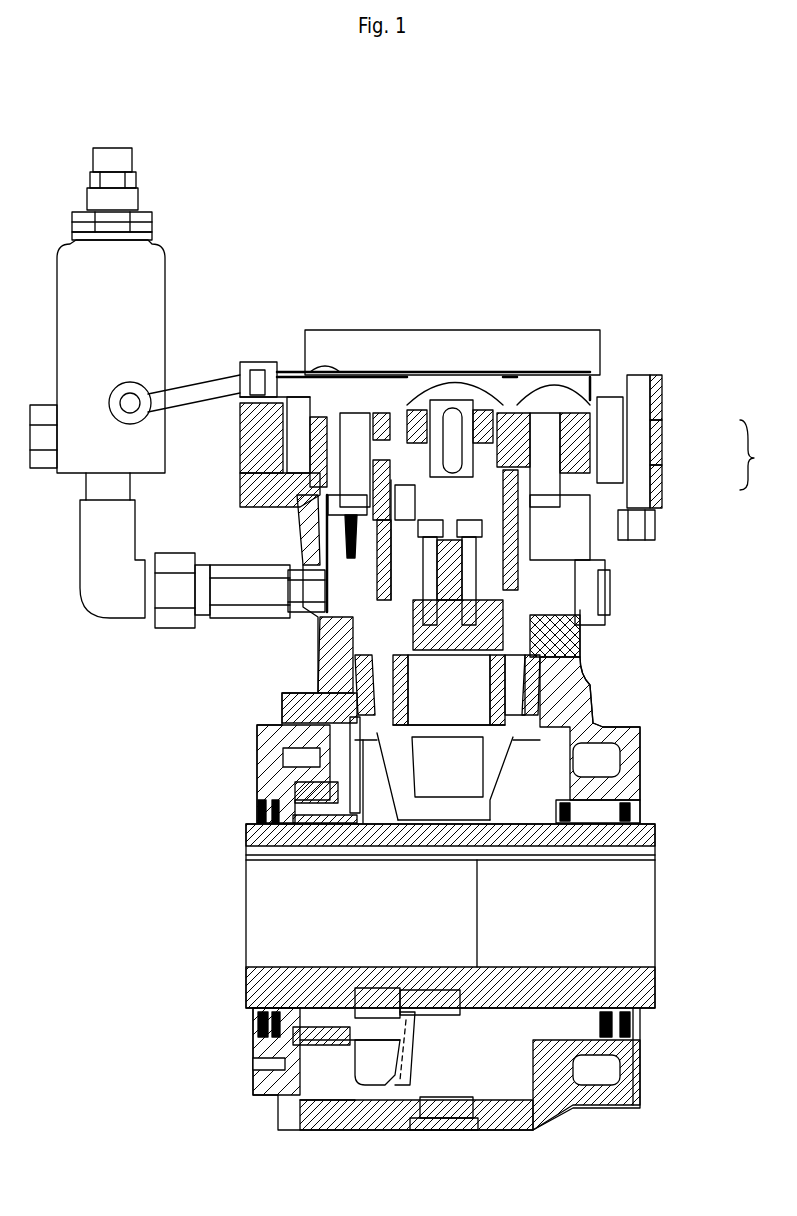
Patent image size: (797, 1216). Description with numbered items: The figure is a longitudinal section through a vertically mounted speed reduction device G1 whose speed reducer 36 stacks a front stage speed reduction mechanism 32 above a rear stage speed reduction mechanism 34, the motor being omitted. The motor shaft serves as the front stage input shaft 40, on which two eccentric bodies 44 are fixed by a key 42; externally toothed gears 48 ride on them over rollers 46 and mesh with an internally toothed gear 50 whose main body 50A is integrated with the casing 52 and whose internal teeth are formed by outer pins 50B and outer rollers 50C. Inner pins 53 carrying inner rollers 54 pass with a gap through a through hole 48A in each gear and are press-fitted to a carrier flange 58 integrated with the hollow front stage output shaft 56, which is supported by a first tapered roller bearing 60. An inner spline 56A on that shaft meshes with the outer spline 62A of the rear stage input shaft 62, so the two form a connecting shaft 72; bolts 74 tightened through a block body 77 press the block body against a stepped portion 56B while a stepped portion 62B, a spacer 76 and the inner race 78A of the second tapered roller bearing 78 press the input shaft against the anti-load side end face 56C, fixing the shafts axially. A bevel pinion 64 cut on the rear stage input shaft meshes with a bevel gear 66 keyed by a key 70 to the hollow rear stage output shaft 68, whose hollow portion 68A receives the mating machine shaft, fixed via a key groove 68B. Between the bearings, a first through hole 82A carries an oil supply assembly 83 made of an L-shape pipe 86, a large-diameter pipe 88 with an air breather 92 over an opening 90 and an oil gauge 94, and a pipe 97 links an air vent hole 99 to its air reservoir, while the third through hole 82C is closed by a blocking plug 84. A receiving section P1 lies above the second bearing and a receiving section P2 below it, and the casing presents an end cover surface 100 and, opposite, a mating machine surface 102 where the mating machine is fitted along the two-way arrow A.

The speed reduction device G1 is at (593, 182).
The front stage speed reduction mechanism 32 is at (565, 538).
The rear stage speed reduction mechanism 34 is at (516, 762).
The speed reducer 36 is at (710, 688).
The front stage input shaft 40 is at (466, 405).
The key 42 is at (507, 390).
The eccentric bodies 44 is at (452, 405).
The rollers 46 is at (590, 382).
The externally toothed gears 48 is at (283, 400).
The through hole 48A is at (340, 400).
The internally toothed gear 50 is at (763, 455).
The main body 50A is at (660, 420).
The outer pins 50B is at (658, 448).
The outer rollers 50C is at (658, 470).
The casing 52 is at (655, 495).
The inner pins 53 is at (310, 537).
The inner rollers 54 is at (300, 510).
The front stage output shaft 56 is at (355, 575).
The inner spline 56A is at (580, 632).
The stepped portion 56B is at (416, 540).
The anti-load side end face 56C is at (395, 608).
The carrier flange 58 is at (398, 494).
The first tapered roller bearing 60 is at (570, 556).
The rear stage input shaft 62 is at (358, 672).
The outer spline 62A is at (585, 652).
The stepped portion 62B is at (510, 706).
The bevel pinion 64 is at (470, 780).
The bevel gear 66 is at (420, 1064).
The rear stage output shaft 68 is at (655, 834).
The hollow portion 68A is at (624, 954).
The key groove 68B is at (525, 850).
The key 70 is at (380, 990).
The connecting shaft 72 is at (375, 633).
The bolts 74 is at (440, 515).
The spacer 76 is at (535, 672).
The block body 77 is at (560, 542).
The second tapered roller bearing 78 is at (355, 700).
The inner race 78A is at (412, 698).
The first through hole 82A is at (330, 612).
The third through hole 82C is at (610, 614).
The oil supply assembly 83 is at (75, 603).
The blocking plugs 84 is at (612, 598).
The L-shape pipe 86 is at (133, 573).
The large-diameter pipe 88 is at (148, 307).
The opening 90 is at (150, 224).
The air breather 92 is at (130, 196).
The oil gauge 94 is at (40, 440).
The pipe 97 is at (186, 392).
The air vent hole 99 is at (313, 372).
The end cover surface 100 is at (248, 1033).
The mating machine surface 102 is at (648, 1060).
The receiving section P1 is at (232, 588).
The receiving section P2 is at (226, 776).
The two-way arrow A is at (735, 918).